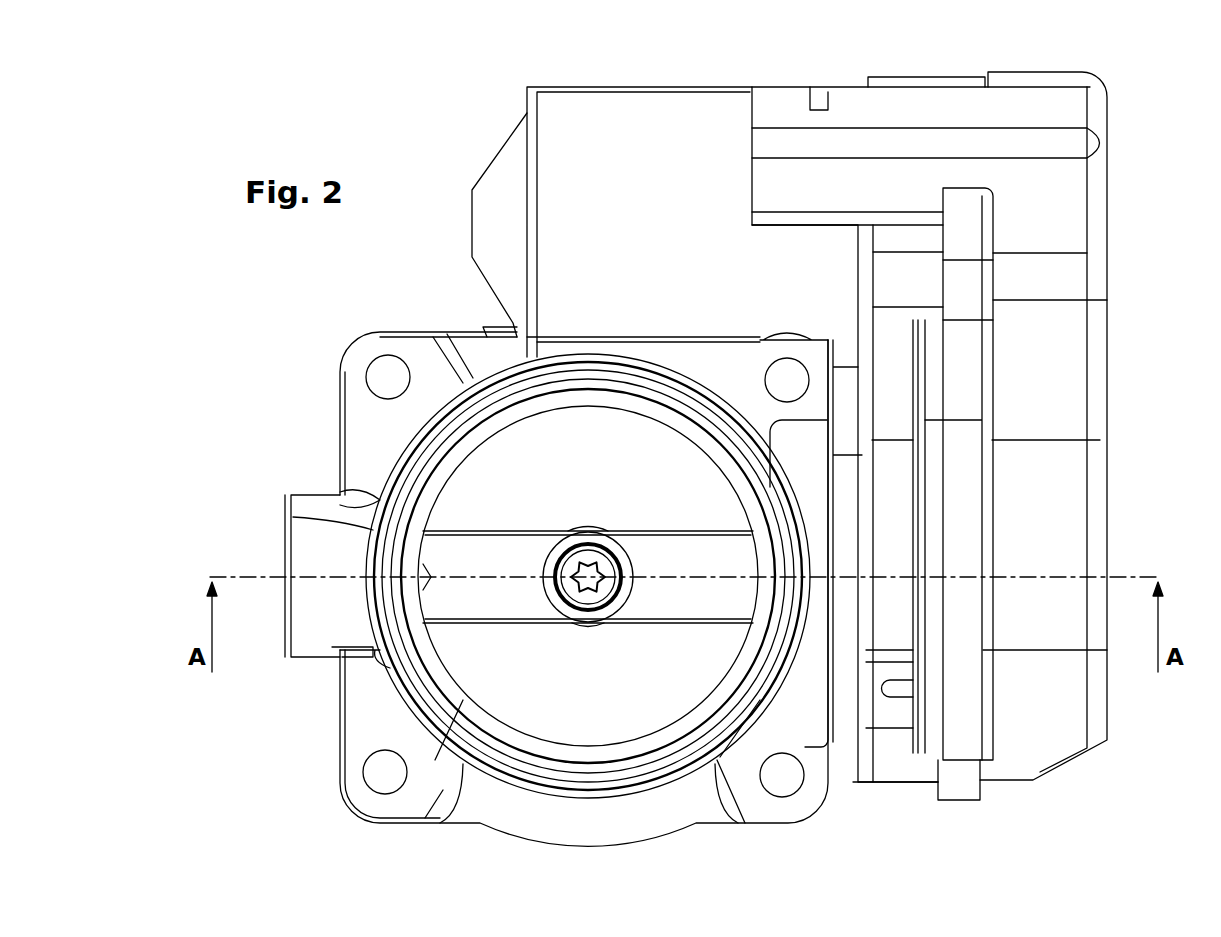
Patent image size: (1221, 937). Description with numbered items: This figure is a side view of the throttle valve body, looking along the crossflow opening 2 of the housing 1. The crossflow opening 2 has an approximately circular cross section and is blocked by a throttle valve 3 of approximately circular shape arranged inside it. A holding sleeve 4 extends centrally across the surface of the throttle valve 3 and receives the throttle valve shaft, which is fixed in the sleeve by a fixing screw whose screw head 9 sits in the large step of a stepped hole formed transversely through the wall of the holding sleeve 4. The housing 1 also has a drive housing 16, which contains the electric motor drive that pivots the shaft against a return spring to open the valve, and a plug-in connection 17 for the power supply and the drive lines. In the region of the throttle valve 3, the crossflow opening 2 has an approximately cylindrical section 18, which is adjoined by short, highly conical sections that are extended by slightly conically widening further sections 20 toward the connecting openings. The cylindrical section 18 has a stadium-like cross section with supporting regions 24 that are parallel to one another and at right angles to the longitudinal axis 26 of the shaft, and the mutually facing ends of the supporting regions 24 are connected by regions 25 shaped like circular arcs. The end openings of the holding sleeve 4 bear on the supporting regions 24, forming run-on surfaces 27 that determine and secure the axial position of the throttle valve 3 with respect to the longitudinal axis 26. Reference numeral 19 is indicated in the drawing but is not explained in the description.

The housing 1 is at (357, 393).
The crossflow opening 2 is at (457, 675).
The throttle valve 3 is at (462, 688).
The holding sleeve 4 is at (525, 608).
The screw head 9 is at (600, 592).
The drive housing 16 is at (1060, 380).
The plug-in connection 17 is at (782, 112).
The approximately cylindrical section 18 is at (400, 460).
The insert ring 19 is at (397, 481).
The slightly conically widening further sections 20 is at (393, 526).
The supporting regions 24 is at (430, 557).
The regions shaped like circular arcs 25 is at (705, 450).
The longitudinal axis 26 is at (510, 577).
The run-on surfaces 27 is at (420, 595).